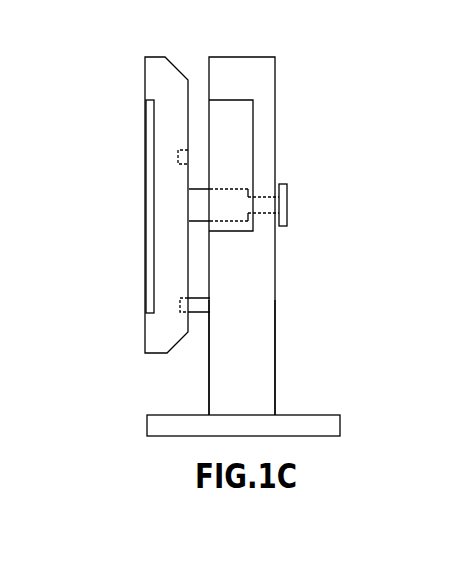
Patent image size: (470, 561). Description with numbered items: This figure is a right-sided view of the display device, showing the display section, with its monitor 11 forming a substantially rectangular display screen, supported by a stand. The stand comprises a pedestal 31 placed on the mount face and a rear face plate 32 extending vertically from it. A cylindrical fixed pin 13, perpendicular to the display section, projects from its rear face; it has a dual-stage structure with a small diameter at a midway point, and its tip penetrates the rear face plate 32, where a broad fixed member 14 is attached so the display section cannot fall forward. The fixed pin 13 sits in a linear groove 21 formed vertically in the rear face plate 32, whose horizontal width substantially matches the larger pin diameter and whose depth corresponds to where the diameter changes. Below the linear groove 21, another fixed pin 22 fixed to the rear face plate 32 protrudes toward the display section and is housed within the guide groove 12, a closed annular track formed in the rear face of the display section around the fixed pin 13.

The monitor 11 is at (145, 248).
The guide groove 12 is at (178, 152).
The fixed pin 13 is at (200, 189).
The fixed member 14 is at (288, 207).
The linear groove 21 is at (275, 146).
The fixed pin 22 is at (200, 297).
The pedestal 31 is at (342, 416).
The rear face plate 32 is at (275, 333).